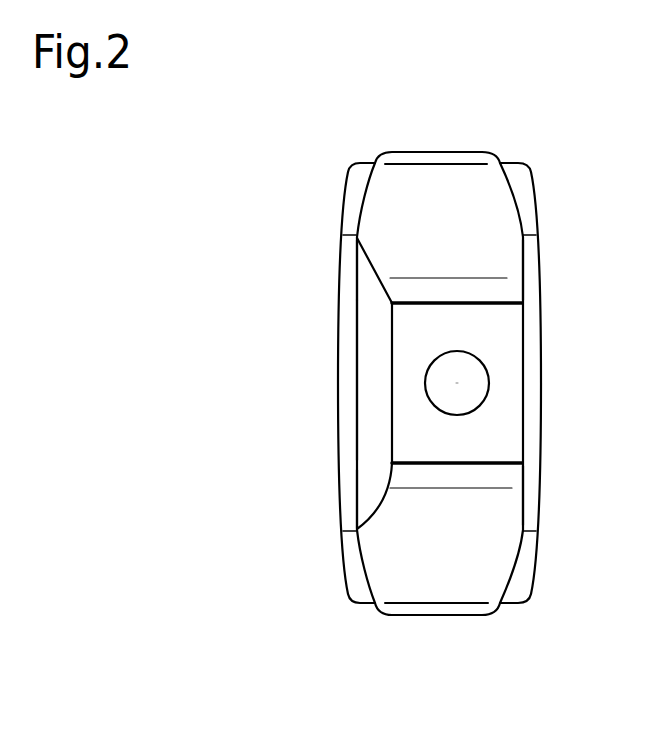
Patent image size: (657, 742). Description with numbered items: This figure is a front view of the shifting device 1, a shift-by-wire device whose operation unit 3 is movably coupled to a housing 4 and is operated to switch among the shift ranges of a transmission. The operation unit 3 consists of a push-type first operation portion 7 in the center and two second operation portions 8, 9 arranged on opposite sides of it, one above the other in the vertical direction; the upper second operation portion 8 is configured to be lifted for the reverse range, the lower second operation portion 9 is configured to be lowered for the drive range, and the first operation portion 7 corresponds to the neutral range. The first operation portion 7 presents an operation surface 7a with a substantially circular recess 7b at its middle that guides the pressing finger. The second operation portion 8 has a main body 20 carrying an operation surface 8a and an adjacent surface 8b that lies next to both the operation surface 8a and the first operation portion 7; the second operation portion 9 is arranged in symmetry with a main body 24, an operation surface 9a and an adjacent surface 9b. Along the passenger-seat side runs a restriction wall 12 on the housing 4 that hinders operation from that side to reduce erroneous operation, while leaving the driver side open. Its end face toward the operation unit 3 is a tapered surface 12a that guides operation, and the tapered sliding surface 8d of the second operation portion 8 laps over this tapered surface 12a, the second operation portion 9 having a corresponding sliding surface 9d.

The shifting device 1 is at (273, 142).
The operation unit 3 is at (493, 385).
The housing 4 is at (541, 282).
The first operation portion 7 is at (500, 338).
The operation surface 7a is at (500, 372).
The recess 7b is at (470, 389).
The second operation portion 8 is at (442, 151).
The operation surface 8a is at (383, 200).
The adjacent surface 8b is at (483, 288).
The sliding surface 8d is at (378, 272).
The second operation portion 9 is at (443, 617).
The operation surface 9a is at (387, 557).
The adjacent surface 9b is at (500, 482).
The sliding surface 9d is at (380, 493).
The restriction wall 12 is at (339, 384).
The tapered surface 12a is at (373, 312).
The main body 20 is at (500, 210).
The main body 24 is at (503, 560).